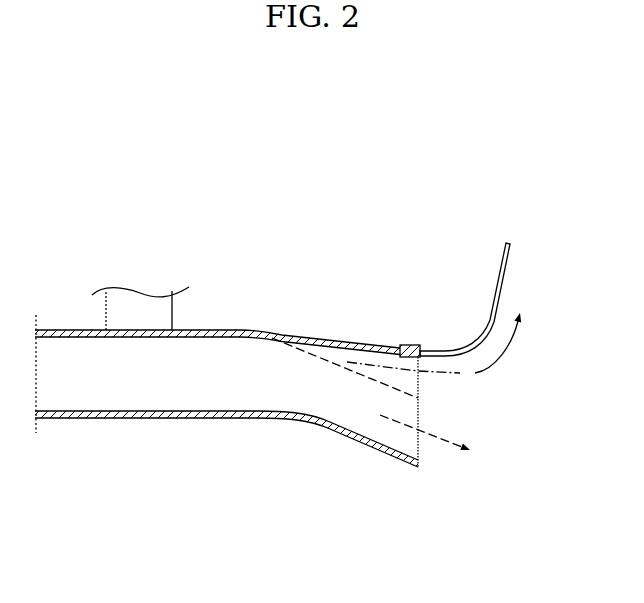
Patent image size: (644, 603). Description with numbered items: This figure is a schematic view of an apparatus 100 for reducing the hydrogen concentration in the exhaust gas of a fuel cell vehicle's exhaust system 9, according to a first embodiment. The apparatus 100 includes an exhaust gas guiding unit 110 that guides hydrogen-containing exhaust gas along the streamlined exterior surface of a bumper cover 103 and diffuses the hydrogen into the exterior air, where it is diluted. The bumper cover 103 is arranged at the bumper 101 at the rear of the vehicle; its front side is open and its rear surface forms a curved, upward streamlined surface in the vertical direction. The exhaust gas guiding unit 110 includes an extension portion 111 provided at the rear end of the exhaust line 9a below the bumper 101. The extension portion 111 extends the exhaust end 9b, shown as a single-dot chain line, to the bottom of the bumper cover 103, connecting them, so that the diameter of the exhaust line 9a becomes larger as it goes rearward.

The exhaust system 9 is at (146, 402).
The exhaust line 9a is at (137, 418).
The exhaust end 9b is at (418, 412).
The apparatus for reducing hydrogen concentration 100 is at (332, 156).
The bumper 101 is at (526, 270).
The bumper cover 103 is at (504, 292).
The exhaust gas guiding unit 110 is at (377, 465).
The extension portion 111 is at (327, 362).